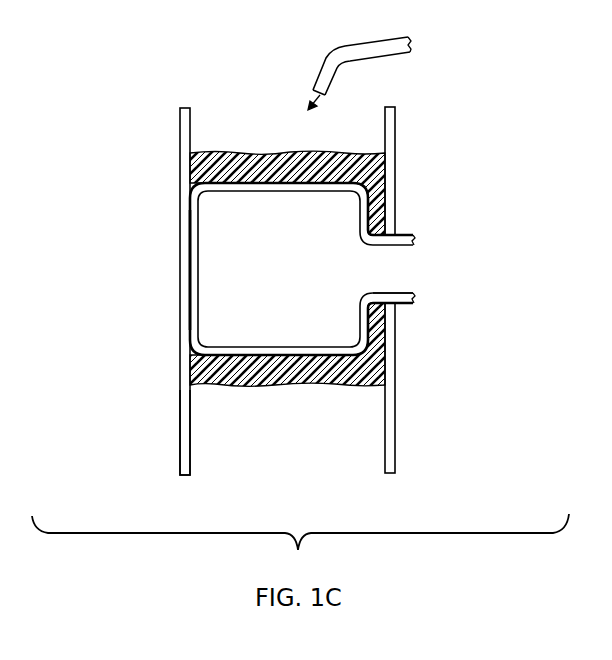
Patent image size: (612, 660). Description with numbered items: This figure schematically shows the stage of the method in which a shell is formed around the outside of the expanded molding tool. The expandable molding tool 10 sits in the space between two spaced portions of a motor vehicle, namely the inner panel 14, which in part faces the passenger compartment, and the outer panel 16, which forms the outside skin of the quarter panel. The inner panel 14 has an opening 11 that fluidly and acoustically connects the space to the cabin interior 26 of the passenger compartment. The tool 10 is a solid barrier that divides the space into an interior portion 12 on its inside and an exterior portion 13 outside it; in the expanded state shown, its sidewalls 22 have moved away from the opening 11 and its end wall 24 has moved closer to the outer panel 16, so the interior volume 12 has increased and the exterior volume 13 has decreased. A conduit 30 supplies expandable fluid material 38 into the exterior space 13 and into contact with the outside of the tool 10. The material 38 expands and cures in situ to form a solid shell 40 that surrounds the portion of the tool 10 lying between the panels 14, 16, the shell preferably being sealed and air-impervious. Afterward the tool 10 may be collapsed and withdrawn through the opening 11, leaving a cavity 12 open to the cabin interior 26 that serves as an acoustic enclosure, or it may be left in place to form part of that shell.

The expandable molding tool 10 is at (397, 293).
The opening 11 is at (399, 306).
The interior volume portion 12 is at (372, 263).
The exterior volume portion 13 is at (205, 397).
The inner body panel 14 is at (395, 163).
The outer body panel 16 is at (180, 189).
The sidewalls 22 is at (280, 186).
The end wall 24 is at (192, 279).
The passenger compartment interior 26 is at (468, 423).
The conduit 30 is at (398, 45).
The expandable fluid material 38 is at (231, 143).
The solid shell 40 is at (307, 386).